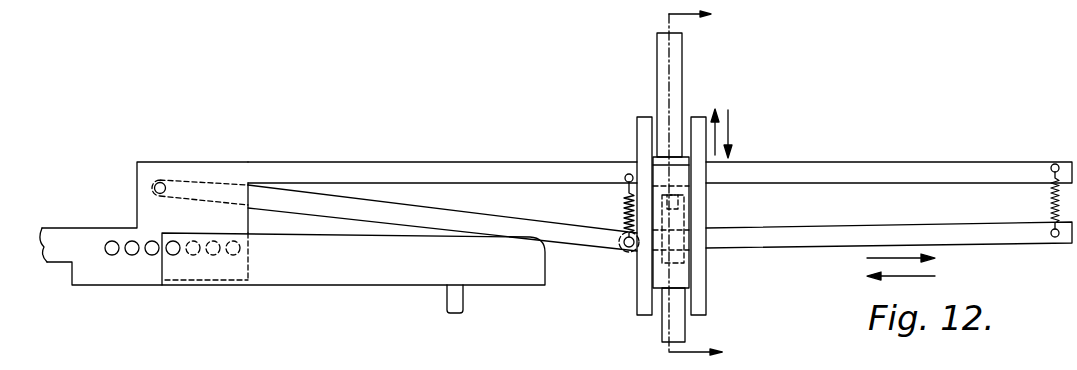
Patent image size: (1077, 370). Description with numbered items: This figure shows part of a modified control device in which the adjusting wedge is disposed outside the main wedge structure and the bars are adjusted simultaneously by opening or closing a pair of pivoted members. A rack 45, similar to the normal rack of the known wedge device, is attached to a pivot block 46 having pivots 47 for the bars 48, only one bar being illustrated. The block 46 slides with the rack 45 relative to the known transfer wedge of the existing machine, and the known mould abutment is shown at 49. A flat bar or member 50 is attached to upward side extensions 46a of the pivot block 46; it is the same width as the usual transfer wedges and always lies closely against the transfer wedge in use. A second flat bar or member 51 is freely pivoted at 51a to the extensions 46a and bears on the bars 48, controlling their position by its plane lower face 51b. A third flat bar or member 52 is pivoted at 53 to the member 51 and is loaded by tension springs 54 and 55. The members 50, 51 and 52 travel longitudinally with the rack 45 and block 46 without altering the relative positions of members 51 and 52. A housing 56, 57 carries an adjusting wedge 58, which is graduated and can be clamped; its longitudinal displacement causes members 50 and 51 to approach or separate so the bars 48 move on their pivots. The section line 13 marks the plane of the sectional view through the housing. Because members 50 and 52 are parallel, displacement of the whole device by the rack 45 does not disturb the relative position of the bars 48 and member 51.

The section line 13 is at (711, 178).
The rack 45 is at (53, 253).
The pivot block 46 is at (132, 270).
The upward side extensions 46a is at (150, 191).
The pivots 47 is at (175, 255).
The bars 48 is at (342, 273).
The mould abutment 49 is at (464, 304).
The flat bar or member 50 is at (840, 168).
The second flat bar or member 51 is at (485, 227).
The pivot 51a is at (159, 182).
The plane lower face 51b is at (428, 230).
The third flat bar or member 52 is at (813, 240).
The pivot 53 is at (627, 248).
The tension spring 54 is at (625, 208).
The tension spring 55 is at (1051, 200).
The housing 56 is at (650, 306).
The housing 57 is at (703, 287).
The adjusting wedge 58 is at (661, 332).